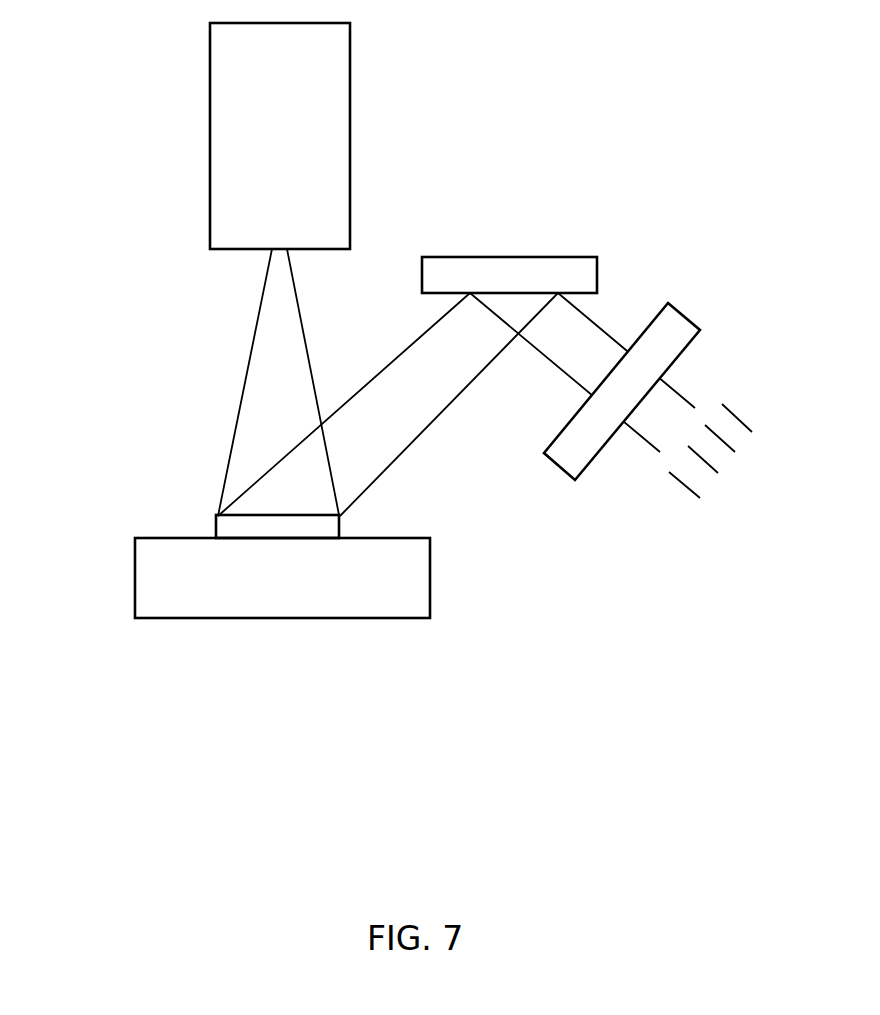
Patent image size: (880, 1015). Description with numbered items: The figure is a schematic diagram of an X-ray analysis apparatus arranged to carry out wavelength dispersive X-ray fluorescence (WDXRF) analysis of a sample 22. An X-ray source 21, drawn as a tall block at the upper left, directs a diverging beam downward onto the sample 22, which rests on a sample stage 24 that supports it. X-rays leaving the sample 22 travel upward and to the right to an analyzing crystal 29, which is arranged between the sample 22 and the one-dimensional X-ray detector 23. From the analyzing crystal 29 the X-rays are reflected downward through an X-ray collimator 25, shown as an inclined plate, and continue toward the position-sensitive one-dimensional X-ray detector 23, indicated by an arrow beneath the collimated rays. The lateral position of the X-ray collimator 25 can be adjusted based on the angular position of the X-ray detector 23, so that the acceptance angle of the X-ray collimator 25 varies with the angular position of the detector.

The X-ray source 21 is at (210, 110).
The sample 22 is at (250, 527).
The 1-D X-ray detector 23 is at (699, 528).
The sample stage 24 is at (338, 618).
The X-ray collimator 25 is at (684, 312).
The analyzing crystal 29 is at (556, 257).